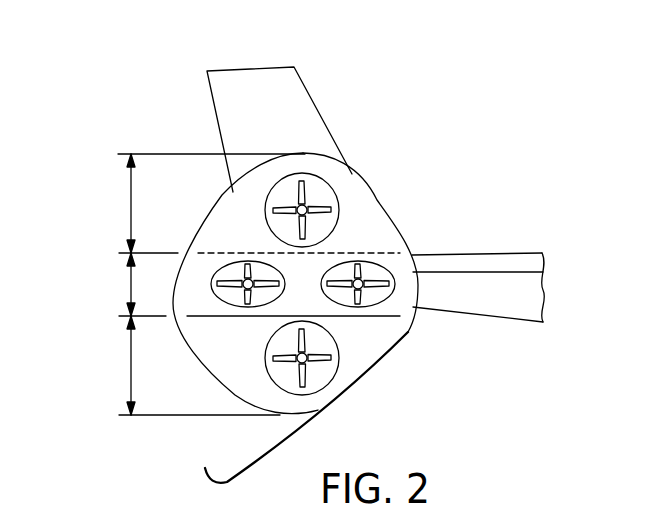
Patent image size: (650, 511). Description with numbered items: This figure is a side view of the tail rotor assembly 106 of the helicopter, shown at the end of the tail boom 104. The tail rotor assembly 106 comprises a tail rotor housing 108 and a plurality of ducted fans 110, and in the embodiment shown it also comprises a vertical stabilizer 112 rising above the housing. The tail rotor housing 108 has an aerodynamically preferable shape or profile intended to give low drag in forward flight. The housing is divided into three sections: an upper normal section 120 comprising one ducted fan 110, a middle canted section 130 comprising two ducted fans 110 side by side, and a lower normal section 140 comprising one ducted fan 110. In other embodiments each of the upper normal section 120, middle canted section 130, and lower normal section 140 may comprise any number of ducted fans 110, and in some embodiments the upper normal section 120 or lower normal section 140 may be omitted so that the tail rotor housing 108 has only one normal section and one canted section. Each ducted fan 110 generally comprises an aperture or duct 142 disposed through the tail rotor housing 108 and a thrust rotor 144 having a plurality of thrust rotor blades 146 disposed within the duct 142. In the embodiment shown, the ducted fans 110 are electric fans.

The tail boom 104 is at (483, 253).
The tail rotor assembly 106 is at (158, 113).
The tail rotor housing 108 is at (360, 180).
The ducted fan 110 is at (313, 166).
The vertical stabilizer 112 is at (232, 67).
The upper normal section 120 is at (127, 202).
The middle canted section 130 is at (127, 283).
The lower normal section 140 is at (127, 366).
The duct 142 is at (312, 385).
The thrust rotor 144 is at (320, 345).
The thrust rotor blades 146 is at (300, 374).